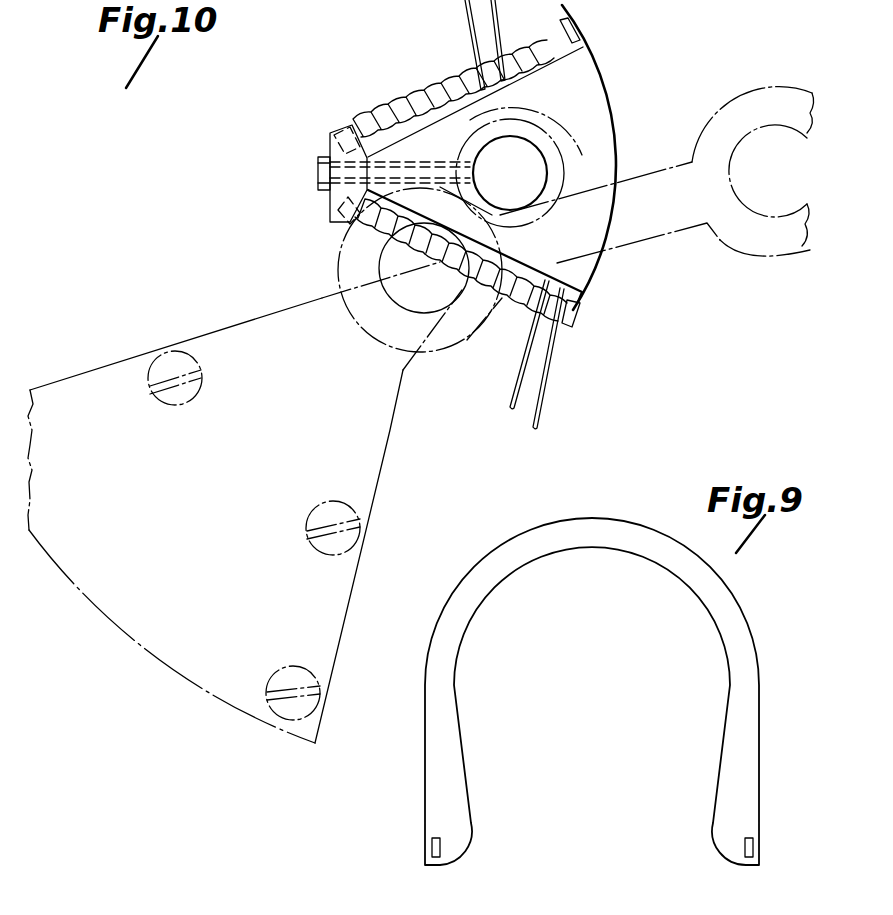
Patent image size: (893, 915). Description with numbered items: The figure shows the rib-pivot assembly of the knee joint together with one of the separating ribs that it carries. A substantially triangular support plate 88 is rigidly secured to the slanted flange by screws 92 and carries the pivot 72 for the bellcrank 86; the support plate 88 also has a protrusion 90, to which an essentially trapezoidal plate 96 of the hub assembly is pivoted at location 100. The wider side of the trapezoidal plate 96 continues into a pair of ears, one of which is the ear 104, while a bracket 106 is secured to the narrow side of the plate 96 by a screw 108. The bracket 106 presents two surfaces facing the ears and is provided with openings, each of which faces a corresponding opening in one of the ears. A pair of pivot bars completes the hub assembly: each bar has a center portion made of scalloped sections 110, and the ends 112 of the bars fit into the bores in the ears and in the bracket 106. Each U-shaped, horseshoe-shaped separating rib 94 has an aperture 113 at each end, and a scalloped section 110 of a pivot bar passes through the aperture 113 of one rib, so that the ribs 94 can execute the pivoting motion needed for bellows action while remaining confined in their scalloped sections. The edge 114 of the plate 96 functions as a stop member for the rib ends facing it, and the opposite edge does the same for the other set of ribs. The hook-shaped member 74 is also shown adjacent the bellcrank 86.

In FIG. 10, the pivot 72 is at (392, 296).
In FIG. 10, the hook 74 is at (770, 218).
In FIG. 10, the bellcrank 86 is at (636, 232).
In FIG. 10, the support plate 88 is at (377, 494).
In FIG. 10, the protrusion 90 is at (565, 147).
In FIG. 10, the screws 92 is at (202, 372).
In FIG. 10, the U-shaped separating ribs 94 is at (547, 392).
In FIG. 9, the U-shaped separating ribs 94 is at (438, 682).
In FIG. 10, the trapezoidal plate 96 is at (573, 84).
In FIG. 10, the pivot location 100 is at (562, 128).
In FIG. 10, the ear 104 is at (570, 327).
In FIG. 10, the bracket 106 is at (329, 130).
In FIG. 10, the screw 108 is at (320, 173).
In FIG. 10, the scalloped sections 110 is at (391, 111).
In FIG. 10, the pivot bar ends 112 is at (340, 117).
In FIG. 9, the aperture 113 is at (432, 846).
In FIG. 10, the edge of plate 114 is at (510, 84).